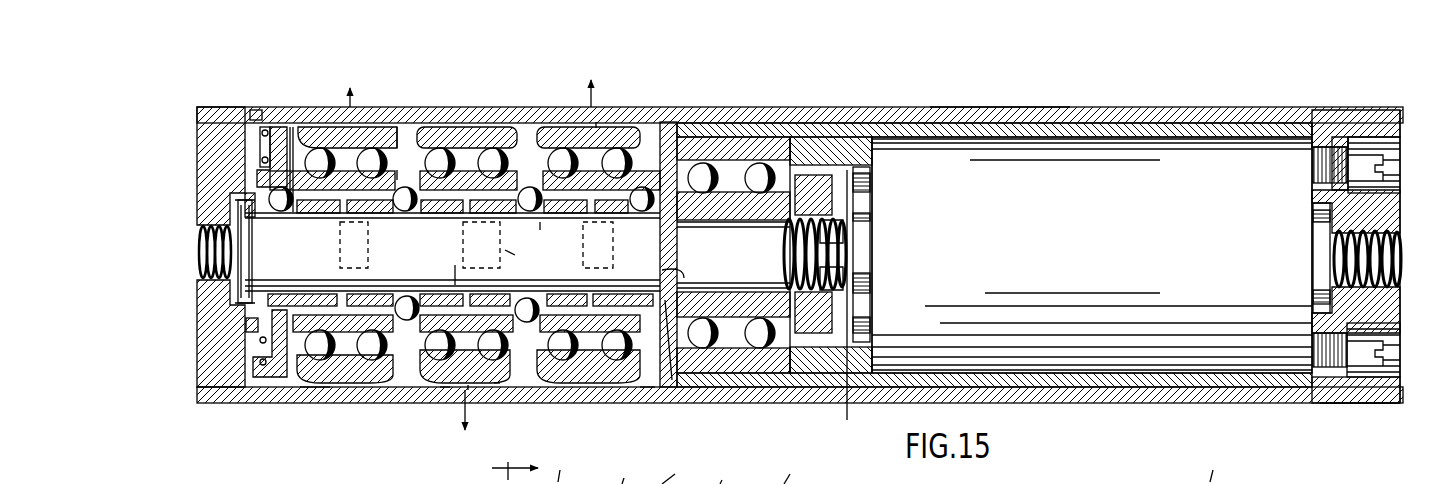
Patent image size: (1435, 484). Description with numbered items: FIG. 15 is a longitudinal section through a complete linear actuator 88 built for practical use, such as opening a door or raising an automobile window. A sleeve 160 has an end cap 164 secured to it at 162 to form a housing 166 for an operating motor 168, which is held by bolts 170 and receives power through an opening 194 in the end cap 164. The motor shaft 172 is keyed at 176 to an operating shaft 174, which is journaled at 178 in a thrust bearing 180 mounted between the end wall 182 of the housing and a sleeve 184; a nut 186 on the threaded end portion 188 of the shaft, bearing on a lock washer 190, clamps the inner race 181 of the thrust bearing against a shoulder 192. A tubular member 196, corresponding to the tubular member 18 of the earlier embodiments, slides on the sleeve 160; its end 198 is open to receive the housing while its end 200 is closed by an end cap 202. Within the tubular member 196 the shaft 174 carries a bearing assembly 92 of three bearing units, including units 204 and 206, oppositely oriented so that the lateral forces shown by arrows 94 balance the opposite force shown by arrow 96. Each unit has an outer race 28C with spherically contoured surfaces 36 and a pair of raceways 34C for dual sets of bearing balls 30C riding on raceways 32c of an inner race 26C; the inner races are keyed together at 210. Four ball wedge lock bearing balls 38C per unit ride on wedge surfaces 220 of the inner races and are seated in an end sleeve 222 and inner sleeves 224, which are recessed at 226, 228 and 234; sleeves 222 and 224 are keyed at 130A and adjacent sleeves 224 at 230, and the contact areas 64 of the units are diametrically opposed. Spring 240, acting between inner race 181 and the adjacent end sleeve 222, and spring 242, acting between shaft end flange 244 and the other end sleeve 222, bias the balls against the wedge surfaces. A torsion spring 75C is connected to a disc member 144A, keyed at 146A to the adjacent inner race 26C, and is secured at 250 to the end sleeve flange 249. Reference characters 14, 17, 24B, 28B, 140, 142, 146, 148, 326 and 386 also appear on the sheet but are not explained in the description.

The assembly 14 is at (500, 467).
The sleeve 17 is at (318, 183).
The tubular member 18 is at (469, 137).
The assembly 24B is at (789, 465).
The inner race 26C is at (395, 385).
The member 28B is at (723, 471).
The outer race 28C is at (307, 147).
The bearing balls 30C is at (293, 155).
The raceways 32c is at (496, 385).
The raceways 34C is at (322, 140).
The spherically contoured surfaces 36 is at (411, 155).
The ball wedge lock bearing balls 38C is at (253, 200).
The contact area 64 is at (598, 122).
The torsion spring 75C is at (257, 140).
The linear actuator device 88 is at (948, 106).
The bearing assembly 92 is at (652, 118).
The arrows 94 is at (488, 75).
The arrow 96 is at (465, 397).
The keying 130A is at (345, 255).
The member 140 is at (567, 464).
The member 142 is at (913, 465).
The disc member 144A is at (262, 110).
The member 146 is at (678, 466).
The keying 146A is at (283, 127).
The member 148 is at (627, 469).
The sleeve 160 is at (1100, 126).
The securement 162 is at (1325, 124).
The end cap 164 is at (1401, 112).
The housing 166 is at (1297, 404).
The operating motor 168 is at (1165, 362).
The bolts 170 is at (1383, 173).
The shaft 172 is at (860, 262).
The operating shaft 174 is at (672, 380).
The keying 176 is at (862, 232).
The journal 178 is at (873, 183).
The thrust bearing 180 is at (765, 138).
The inner race 181 is at (752, 296).
The end wall 182 is at (647, 388).
The sleeve 184 is at (833, 142).
The nut 186 is at (860, 331).
The threaded end portion 188 is at (858, 287).
The lock washer 190 is at (860, 308).
The shoulder 192 is at (678, 272).
The opening 194 is at (1347, 258).
The tubular member 196 is at (1032, 110).
The open end 198 is at (1312, 110).
The closed end 200 is at (220, 404).
The end cap 202 is at (197, 376).
The bearing unit 204 is at (313, 388).
The bearing unit 206 is at (443, 388).
The keying 210 is at (437, 128).
The wedge surfaces 220 is at (288, 282).
The end sleeve 222 is at (313, 294).
The inner sleeve 224 is at (466, 281).
The recess 226 is at (297, 214).
The recess 228 is at (400, 212).
The keying 230 is at (507, 250).
The recesses 234 is at (393, 297).
The spring 240 is at (680, 205).
The spring 242 is at (217, 297).
The shaft end flange 244 is at (220, 270).
The end sleeve flange 249 is at (248, 327).
The securement 250 is at (247, 337).
The detail 326 is at (540, 226).
The detail 386 is at (440, 262).